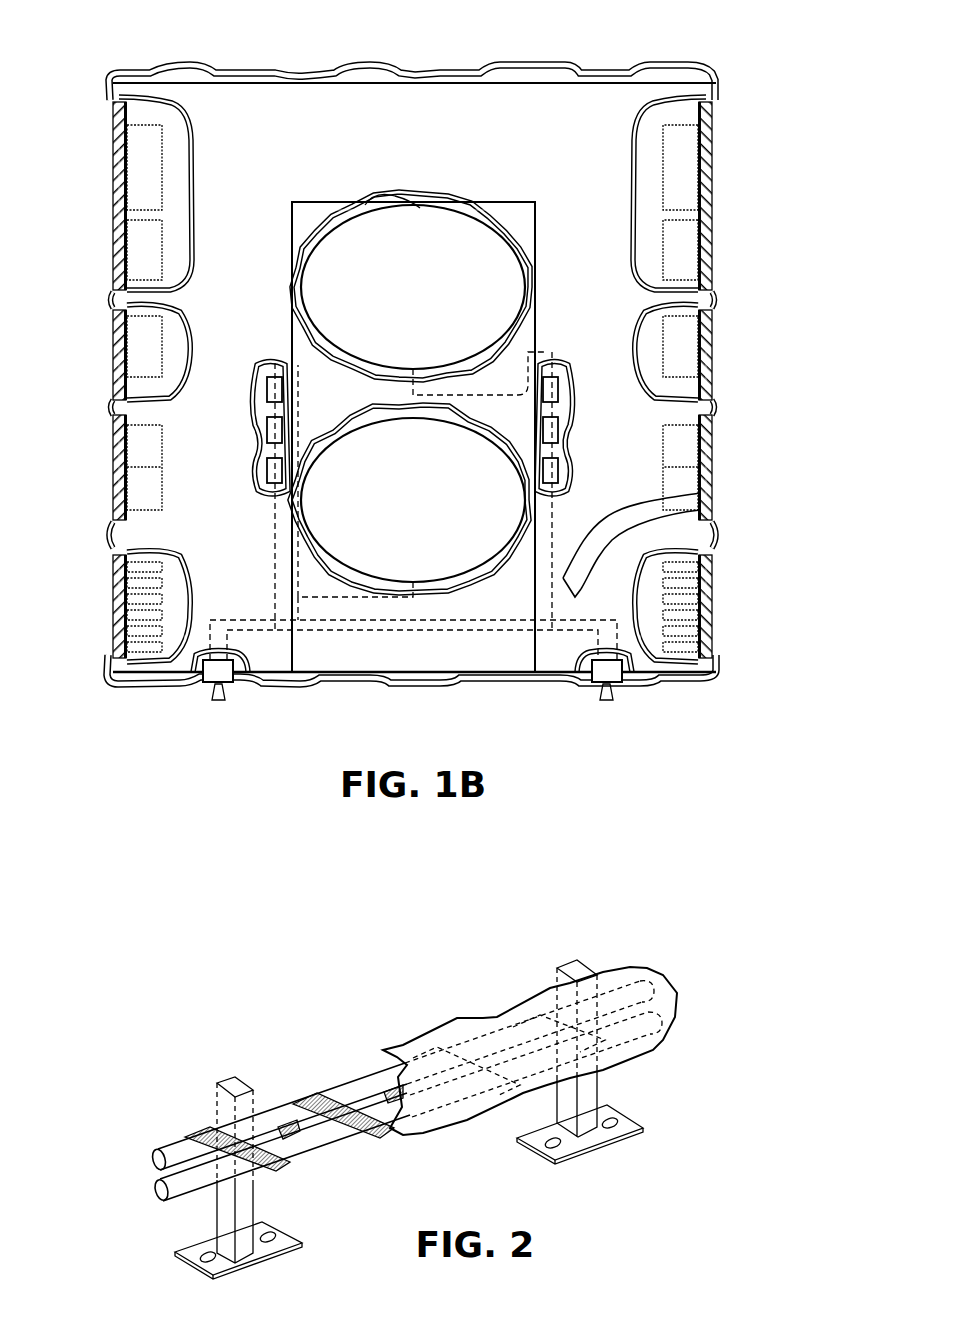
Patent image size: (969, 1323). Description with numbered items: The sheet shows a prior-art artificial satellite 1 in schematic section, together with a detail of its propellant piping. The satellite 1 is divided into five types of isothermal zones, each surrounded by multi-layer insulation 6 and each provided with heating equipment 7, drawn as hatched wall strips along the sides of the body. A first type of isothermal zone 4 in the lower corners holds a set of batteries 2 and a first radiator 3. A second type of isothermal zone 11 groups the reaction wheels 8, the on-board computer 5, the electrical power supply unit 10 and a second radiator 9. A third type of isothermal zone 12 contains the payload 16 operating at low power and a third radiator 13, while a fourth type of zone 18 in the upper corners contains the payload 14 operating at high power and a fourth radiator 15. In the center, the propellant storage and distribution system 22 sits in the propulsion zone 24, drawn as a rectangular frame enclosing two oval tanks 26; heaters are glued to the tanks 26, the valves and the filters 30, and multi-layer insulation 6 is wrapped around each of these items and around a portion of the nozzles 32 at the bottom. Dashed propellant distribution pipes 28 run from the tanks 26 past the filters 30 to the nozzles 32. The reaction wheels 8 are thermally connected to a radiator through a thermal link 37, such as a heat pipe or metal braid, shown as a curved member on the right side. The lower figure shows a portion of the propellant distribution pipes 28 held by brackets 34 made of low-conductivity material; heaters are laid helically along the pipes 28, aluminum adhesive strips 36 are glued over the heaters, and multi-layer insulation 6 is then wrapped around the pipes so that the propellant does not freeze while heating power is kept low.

In FIG. 1B, the satellite 1 is at (262, 722).
In FIG. 1B, the batteries 2 is at (143, 598).
In FIG. 1B, the first radiator 3 is at (118, 573).
In FIG. 1B, the first type of isothermal zone 4 is at (170, 643).
In FIG. 1B, the on-board computer 5 is at (143, 505).
In FIG. 1B, the multi-layer insulation 6 is at (605, 68).
In FIG. 2, the multi-layer insulation 6 is at (496, 1005).
In FIG. 1B, the heating equipment 7 is at (118, 120).
In FIG. 1B, the reaction wheels 8 is at (601, 566).
In FIG. 1B, the second radiator 9 is at (118, 478).
In FIG. 1B, the electrical power supply unit 10 is at (145, 437).
In FIG. 1B, the second type of isothermal zone 11 is at (413, 165).
In FIG. 1B, the third type of isothermal zone 12 is at (112, 297).
In FIG. 1B, the third radiator 13 is at (118, 385).
In FIG. 1B, the payload operating at high power 14 is at (145, 160).
In FIG. 1B, the fourth radiator 15 is at (118, 180).
In FIG. 1B, the payload operating at low power 16 is at (145, 360).
In FIG. 1B, the fourth type of zone 18 is at (143, 118).
In FIG. 1B, the propellant storage and distribution system 22 is at (380, 195).
In FIG. 1B, the propulsion zone 24 is at (540, 252).
In FIG. 1B, the tanks 26 is at (413, 393).
In FIG. 1B, the propellant distribution pipes 28 is at (377, 636).
In FIG. 2, the propellant distribution pipes 28 is at (154, 1163).
In FIG. 1B, the filters 30 is at (556, 427).
In FIG. 1B, the nozzles 32 is at (620, 684).
In FIG. 2, the brackets 34 is at (220, 1057).
In FIG. 2, the adhesive strips 36 is at (200, 1128).
In FIG. 1B, the thermal link 37 is at (655, 497).